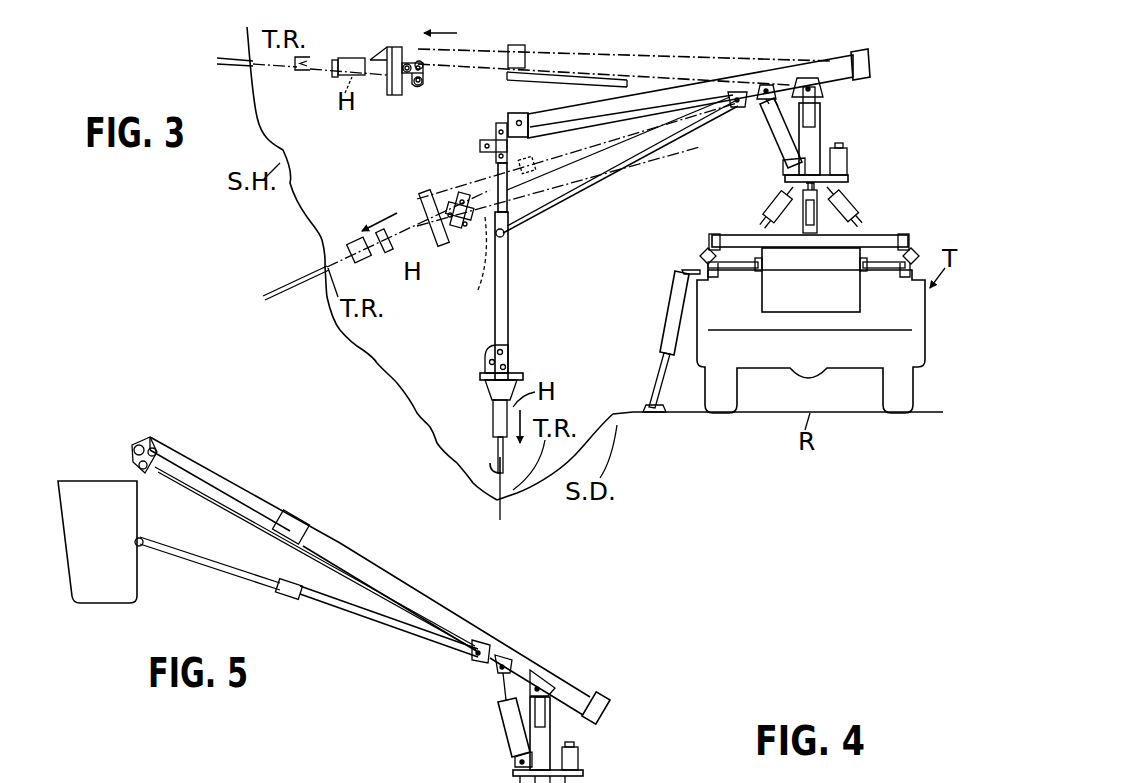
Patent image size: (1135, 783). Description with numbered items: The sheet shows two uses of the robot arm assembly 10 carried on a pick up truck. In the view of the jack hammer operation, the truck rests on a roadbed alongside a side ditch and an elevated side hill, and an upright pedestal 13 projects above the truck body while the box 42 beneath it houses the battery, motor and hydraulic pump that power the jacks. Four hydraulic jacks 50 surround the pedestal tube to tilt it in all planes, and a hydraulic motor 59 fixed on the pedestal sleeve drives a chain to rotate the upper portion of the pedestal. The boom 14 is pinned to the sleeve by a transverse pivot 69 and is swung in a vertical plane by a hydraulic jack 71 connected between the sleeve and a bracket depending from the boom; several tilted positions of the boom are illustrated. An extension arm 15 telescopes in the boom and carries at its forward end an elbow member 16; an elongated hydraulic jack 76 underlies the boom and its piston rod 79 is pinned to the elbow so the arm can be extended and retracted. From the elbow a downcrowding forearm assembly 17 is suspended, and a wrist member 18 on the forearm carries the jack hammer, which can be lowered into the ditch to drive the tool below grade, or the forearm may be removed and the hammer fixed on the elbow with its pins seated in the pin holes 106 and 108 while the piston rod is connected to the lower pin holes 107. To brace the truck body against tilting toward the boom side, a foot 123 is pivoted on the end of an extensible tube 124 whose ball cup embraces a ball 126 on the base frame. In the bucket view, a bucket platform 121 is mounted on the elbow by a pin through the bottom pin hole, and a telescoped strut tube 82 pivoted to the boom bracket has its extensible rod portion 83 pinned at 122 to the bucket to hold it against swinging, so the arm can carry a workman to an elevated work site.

In FIG. 3, the robot arm assembly 10 is at (832, 54).
In FIG. 5, the robot arm assembly 10 is at (514, 641).
In FIG. 3, the pedestal 13 is at (822, 133).
In FIG. 3, the boom 14 is at (588, 50).
In FIG. 5, the boom 14 is at (410, 583).
In FIG. 3, the extension arm 15 is at (487, 53).
In FIG. 5, the extension arm 15 is at (245, 492).
In FIG. 3, the elbow member 16 is at (411, 92).
In FIG. 5, the elbow member 16 is at (153, 437).
In FIG. 3, the forearm assembly 17 is at (506, 298).
In FIG. 3, the wrist member 18 is at (512, 362).
In FIG. 3, the box 42 is at (811, 280).
In FIG. 3, the hydraulic jacks 50 is at (852, 200).
In FIG. 5, the hydraulic motor 59 is at (579, 757).
In FIG. 5, the transverse pivot 69 is at (542, 687).
In FIG. 3, the hydraulic jack 71 is at (772, 137).
In FIG. 5, the hydraulic jack 71 is at (500, 729).
In FIG. 3, the hydraulic jack 76 is at (518, 84).
In FIG. 5, the hydraulic jack 76 is at (296, 556).
In FIG. 3, the piston rod 79 is at (466, 200).
In FIG. 3, the strut tube 82 is at (623, 172).
In FIG. 5, the strut tube 82 is at (340, 618).
In FIG. 5, the extensible rod portion 83 is at (245, 583).
In FIG. 3, the pin holes 106 is at (419, 60).
In FIG. 5, the pin holes 106 is at (158, 452).
In FIG. 3, the pin holes 107 is at (421, 90).
In FIG. 5, the pin holes 107 is at (145, 470).
In FIG. 3, the pin holes 108 is at (410, 64).
In FIG. 5, the pin holes 108 is at (136, 446).
In FIG. 5, the bucket platform 121 is at (107, 561).
In FIG. 5, the pin 122 is at (141, 547).
In FIG. 3, the foot 123 is at (653, 407).
In FIG. 3, the extensible tube 124 is at (670, 330).
In FIG. 3, the ball 126 is at (688, 268).